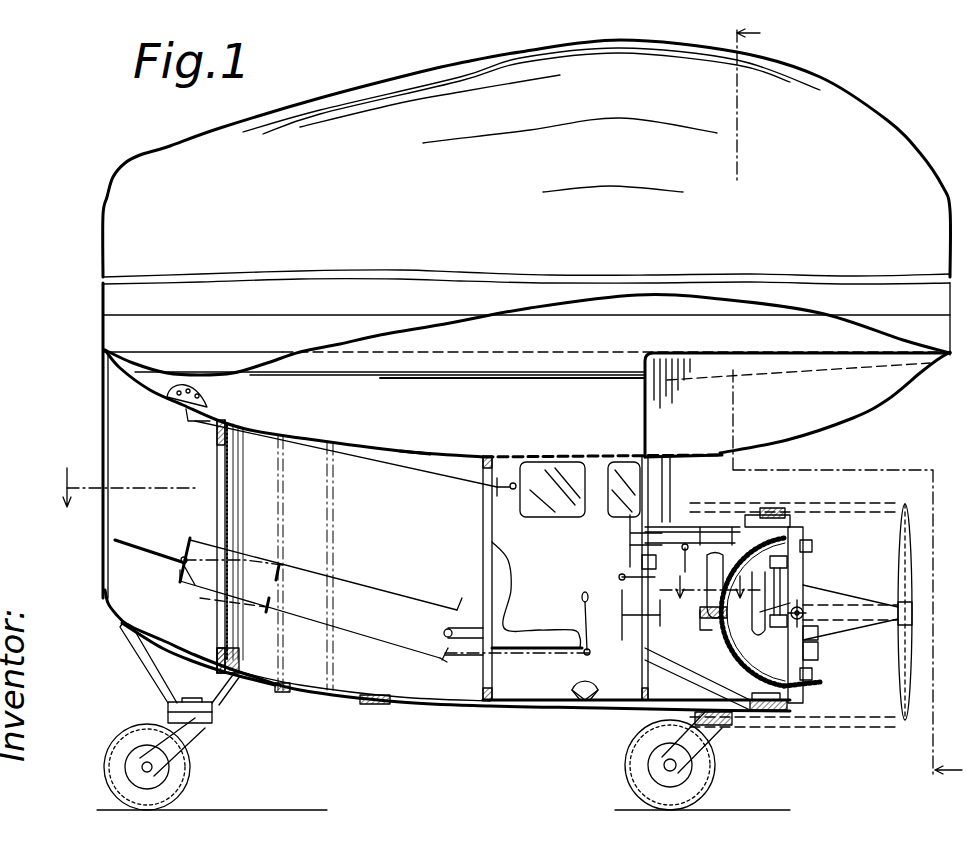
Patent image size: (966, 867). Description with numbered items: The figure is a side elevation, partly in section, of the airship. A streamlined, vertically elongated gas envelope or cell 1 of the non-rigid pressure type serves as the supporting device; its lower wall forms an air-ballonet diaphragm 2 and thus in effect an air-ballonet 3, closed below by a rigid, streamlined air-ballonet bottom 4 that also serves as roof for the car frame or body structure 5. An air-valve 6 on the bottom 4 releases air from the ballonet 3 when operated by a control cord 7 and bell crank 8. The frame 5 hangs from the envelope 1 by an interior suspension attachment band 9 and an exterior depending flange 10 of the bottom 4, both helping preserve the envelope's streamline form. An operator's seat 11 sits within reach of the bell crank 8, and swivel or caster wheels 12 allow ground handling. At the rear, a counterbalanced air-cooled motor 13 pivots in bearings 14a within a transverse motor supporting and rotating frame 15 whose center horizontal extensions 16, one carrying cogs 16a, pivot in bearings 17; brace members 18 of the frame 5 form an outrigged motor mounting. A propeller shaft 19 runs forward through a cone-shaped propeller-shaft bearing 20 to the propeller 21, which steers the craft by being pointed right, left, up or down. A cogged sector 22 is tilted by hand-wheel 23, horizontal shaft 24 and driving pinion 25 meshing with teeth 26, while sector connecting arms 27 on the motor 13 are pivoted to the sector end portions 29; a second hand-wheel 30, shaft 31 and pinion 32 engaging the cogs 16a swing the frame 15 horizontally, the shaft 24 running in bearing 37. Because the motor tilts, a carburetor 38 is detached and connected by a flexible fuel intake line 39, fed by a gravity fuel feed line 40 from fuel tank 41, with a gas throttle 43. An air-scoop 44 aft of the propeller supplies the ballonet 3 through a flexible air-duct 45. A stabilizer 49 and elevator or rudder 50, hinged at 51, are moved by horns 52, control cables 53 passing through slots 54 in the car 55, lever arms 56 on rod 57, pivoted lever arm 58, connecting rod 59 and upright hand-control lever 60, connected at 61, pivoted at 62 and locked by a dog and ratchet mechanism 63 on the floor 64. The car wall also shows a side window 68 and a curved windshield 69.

The gas envelope or cell 1 is at (527, 162).
The air-ballonet diaphragm 2 is at (526, 376).
The air-ballonet 3 is at (643, 399).
The air-ballonet bottom 4 is at (415, 433).
The car frame or body structure 5 is at (400, 542).
The air-valve 6 is at (200, 400).
The control cord 7 is at (346, 454).
The bell crank or elbow lever 8 is at (506, 499).
The suspension attachment band 9 is at (526, 307).
The suspension flange 10 is at (508, 440).
The operator's seat 11 is at (537, 595).
The swivel or caster wheels 12 is at (443, 700).
The motor 13 is at (826, 653).
The bearings 14a is at (830, 615).
The motor supporting and rotating frame 15 is at (826, 637).
The center horizontal extensions 16 is at (795, 612).
The cogs or teeth 16a is at (768, 586).
The bearings 17 is at (759, 591).
The brace members 18 is at (697, 592).
The propeller shaft 19 is at (930, 605).
The propeller-shaft bearing 20 is at (850, 617).
The propeller 21 is at (890, 612).
The cogged sector or segment 22 is at (739, 612).
The hand-wheel 23 is at (627, 613).
The horizontal shaft 24 is at (657, 618).
The spur gear or driving pinion 25 is at (698, 631).
The cogs or teeth 26 is at (744, 612).
The sector connecting members or arms 27 is at (830, 606).
The end portions of the sector 29 is at (818, 693).
The second hand-wheel 30 is at (630, 545).
The second horizontal shaft 31 is at (630, 541).
The second spur gear or driving pinion 32 is at (726, 581).
The bearing or mounting 37 is at (695, 621).
The carburetor 38 is at (680, 564).
The fuel induction or intake line 39 is at (759, 615).
The gravity fuel feed line 40 is at (683, 470).
The fuel tank 41 is at (777, 405).
The gas throttle 43 is at (622, 567).
The air-scoop 44 is at (825, 591).
The flexible air-duct or air-manifold 45 is at (762, 610).
The stabilizer 49 is at (190, 586).
The elevator or rudder 50 is at (148, 538).
The hinge 51 is at (225, 549).
The horns 52 is at (163, 571).
The control lines or cables 53 is at (318, 599).
The openings or slots 54 is at (289, 588).
The car or body 55 is at (503, 577).
The horns or lever arms 56 is at (440, 630).
The rod 57 is at (463, 619).
The pivoted lever arm 58 is at (456, 662).
The longitudinal connecting rod 59 is at (517, 665).
The upright hand-control lever 60 is at (571, 617).
The intermediate connection 61 is at (602, 651).
The pivot 62 is at (602, 680).
The dog and ratchet mechanism 63 is at (573, 677).
The car or body floor 64 is at (547, 686).
The side window 68 is at (552, 471).
The curved windshield 69 is at (624, 471).